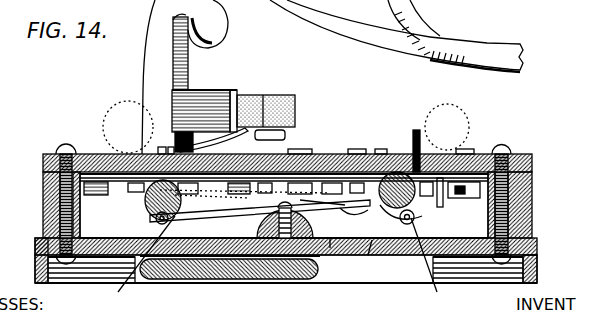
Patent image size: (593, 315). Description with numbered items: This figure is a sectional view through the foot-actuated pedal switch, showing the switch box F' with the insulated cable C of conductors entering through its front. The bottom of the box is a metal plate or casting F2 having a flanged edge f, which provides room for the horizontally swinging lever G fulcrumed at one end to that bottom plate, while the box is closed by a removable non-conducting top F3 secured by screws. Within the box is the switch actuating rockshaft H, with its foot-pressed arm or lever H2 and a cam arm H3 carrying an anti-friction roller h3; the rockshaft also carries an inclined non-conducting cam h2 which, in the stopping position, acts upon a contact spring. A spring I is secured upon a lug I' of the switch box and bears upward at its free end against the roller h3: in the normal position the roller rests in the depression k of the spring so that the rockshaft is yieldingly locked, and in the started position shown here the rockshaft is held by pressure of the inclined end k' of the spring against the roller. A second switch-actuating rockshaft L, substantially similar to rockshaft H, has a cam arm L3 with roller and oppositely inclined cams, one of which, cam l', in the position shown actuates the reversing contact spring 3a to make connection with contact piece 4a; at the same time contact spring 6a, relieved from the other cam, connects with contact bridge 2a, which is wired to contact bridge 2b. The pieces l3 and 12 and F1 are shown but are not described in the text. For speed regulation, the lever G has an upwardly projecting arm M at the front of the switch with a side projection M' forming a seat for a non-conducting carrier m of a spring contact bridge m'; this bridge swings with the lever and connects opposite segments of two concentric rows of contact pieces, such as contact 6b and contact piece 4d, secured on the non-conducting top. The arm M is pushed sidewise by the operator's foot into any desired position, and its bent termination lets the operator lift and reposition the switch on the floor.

The bottom plate F2 is at (43, 163).
The left end wall F1 is at (53, 208).
The switch box F' is at (528, 205).
The non-conducting top F3 is at (378, 246).
The flanged edge f is at (38, 267).
The horizontally swinging lever G is at (258, 278).
The switch actuating rockshaft H is at (148, 203).
The cam arm H3 is at (157, 220).
The arm or lever H2 is at (117, 125).
The inclined cam h2 is at (200, 210).
The anti-friction roller h3 is at (140, 264).
The spring I is at (269, 222).
The lug I' is at (322, 258).
The second switch-actuating rockshaft L is at (415, 200).
The cam arm L3 is at (368, 255).
The lever pin l3 is at (426, 265).
The inclined non-conducting cam l' is at (447, 129).
The reversing contact bridge 2a is at (444, 205).
The reversing contact bridge 2b is at (356, 216).
The reversing contact piece 4a is at (322, 206).
The contact piece 4d is at (358, 155).
The reversing contact spring 3a is at (379, 156).
The post 12 is at (420, 151).
The contact spring 6a is at (463, 156).
The contact 6b is at (292, 155).
The upwardly projecting arm M is at (185, 77).
The side projection M' is at (204, 121).
The non-conducting carrier m is at (266, 107).
The spring contact bridge m' is at (216, 140).
The depression k is at (185, 285).
The inclined end k' is at (149, 225).
The cable C is at (484, 52).